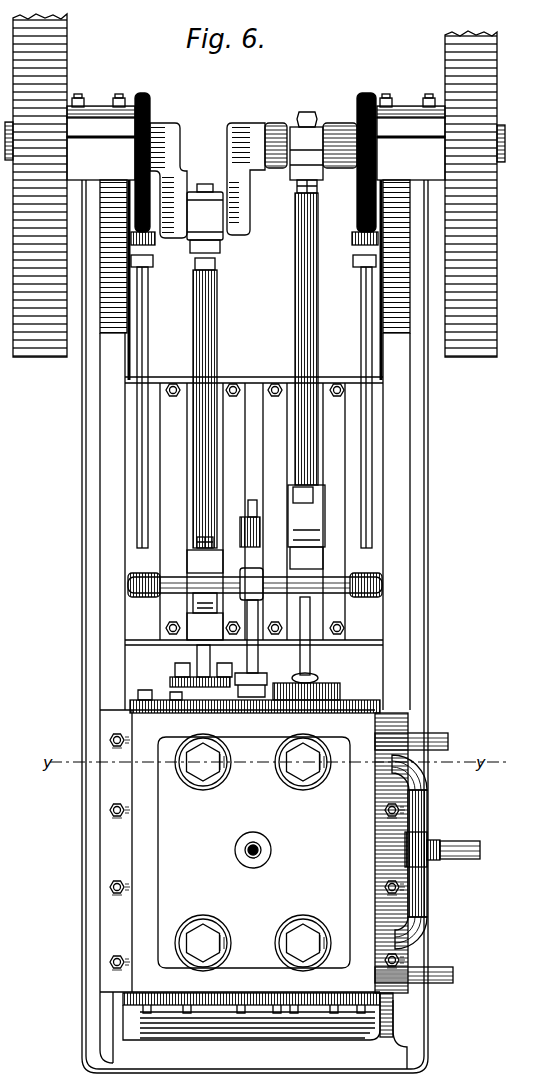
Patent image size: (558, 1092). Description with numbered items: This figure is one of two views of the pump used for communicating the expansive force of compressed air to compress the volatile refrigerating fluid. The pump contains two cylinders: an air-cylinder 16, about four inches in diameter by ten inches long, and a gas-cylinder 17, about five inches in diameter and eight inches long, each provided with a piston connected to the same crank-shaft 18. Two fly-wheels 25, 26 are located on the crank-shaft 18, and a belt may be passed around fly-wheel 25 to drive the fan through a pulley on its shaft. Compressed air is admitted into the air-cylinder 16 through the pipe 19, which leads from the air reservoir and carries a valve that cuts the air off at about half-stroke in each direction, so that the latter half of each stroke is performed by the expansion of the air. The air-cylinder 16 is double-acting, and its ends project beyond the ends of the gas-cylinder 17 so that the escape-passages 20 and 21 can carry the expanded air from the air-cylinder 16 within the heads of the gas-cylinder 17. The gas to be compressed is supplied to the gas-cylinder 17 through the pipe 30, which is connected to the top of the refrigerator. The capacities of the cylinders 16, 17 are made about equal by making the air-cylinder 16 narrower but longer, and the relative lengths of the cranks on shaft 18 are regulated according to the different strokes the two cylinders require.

The air-cylinder 16 is at (176, 886).
The gas-cylinder 17 is at (330, 873).
The crank-shaft 18 is at (246, 179).
The pipe 19 is at (253, 842).
The escape-passage 20 is at (438, 736).
The escape-passage 21 is at (442, 969).
The fly-wheel 25 is at (36, 185).
The fly-wheel 26 is at (475, 194).
The pipe 30 is at (457, 846).